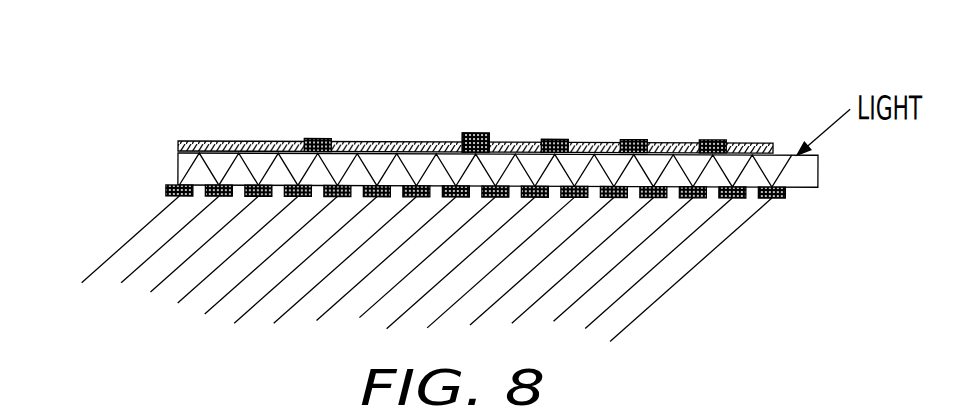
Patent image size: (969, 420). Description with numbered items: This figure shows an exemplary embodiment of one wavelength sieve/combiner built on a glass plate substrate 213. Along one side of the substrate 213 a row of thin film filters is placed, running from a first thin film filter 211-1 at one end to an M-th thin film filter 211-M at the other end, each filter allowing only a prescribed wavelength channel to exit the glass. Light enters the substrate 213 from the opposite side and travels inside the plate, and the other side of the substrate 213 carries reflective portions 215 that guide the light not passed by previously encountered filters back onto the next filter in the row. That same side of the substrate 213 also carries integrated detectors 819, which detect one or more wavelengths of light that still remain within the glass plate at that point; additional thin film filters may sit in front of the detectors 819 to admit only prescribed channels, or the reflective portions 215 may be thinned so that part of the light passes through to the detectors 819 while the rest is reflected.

The substrate 213 is at (382, 153).
The reflective portions 215 is at (202, 141).
The detector 819 is at (320, 138).
The thin film filter 211-M is at (166, 196).
The thin film filter 211-1 is at (786, 199).